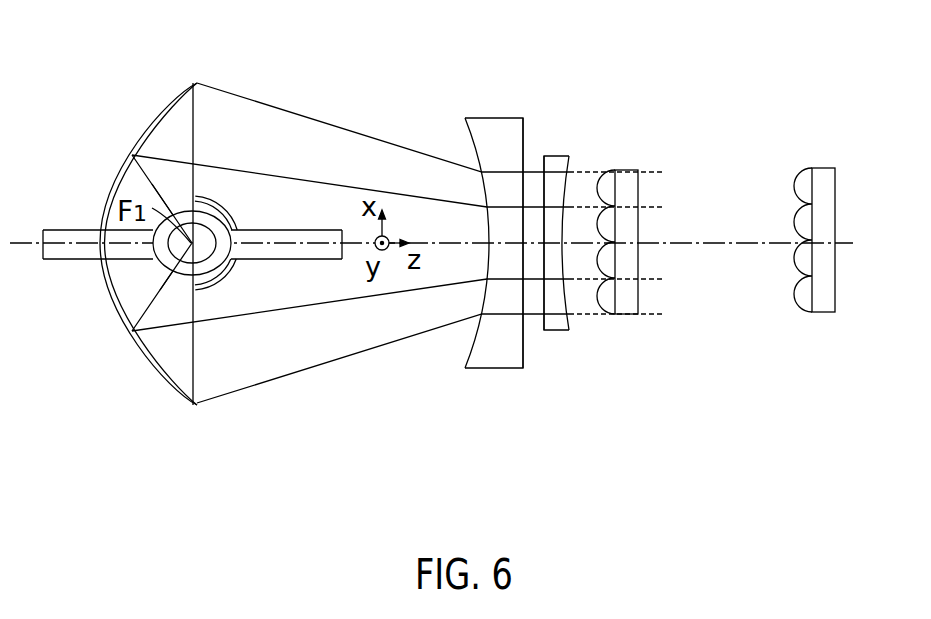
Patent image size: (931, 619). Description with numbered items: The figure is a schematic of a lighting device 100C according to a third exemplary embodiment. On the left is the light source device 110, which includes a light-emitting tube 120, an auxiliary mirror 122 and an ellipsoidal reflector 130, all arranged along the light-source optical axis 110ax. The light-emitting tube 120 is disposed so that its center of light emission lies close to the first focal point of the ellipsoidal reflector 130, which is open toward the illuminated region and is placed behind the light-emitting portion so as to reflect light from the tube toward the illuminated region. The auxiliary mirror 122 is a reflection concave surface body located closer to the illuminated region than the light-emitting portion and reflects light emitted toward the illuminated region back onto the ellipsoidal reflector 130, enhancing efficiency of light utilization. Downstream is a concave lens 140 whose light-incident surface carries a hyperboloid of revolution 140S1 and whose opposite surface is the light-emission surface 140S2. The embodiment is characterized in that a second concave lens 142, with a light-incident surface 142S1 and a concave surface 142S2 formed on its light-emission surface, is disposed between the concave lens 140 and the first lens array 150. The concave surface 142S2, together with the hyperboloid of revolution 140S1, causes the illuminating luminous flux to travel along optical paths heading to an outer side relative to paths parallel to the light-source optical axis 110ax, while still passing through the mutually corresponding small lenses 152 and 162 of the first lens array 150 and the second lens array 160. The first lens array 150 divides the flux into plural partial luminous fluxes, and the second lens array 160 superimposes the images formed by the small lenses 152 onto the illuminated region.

The lighting device 100C is at (600, 502).
The light source device 110 is at (185, 300).
The light-source optical axis 110ax is at (63, 262).
The light-emitting tube 120 is at (190, 277).
The auxiliary mirror 122 is at (220, 283).
The ellipsoidal reflector 130 is at (146, 378).
The concave lens 140 is at (480, 237).
The hyperboloid of revolution 140S1 is at (467, 147).
The light-emission surface of the concave lens 140S2 is at (523, 141).
The second concave lens 142 is at (617, 233).
The light-incident surface of the second concave lens 142S1 is at (544, 157).
The concave surface 142S2 is at (569, 160).
The first lens array 150 is at (681, 258).
The small lenses of the first lens array 152 is at (606, 176).
The second lens array 160 is at (833, 253).
The small lenses of the second lens array 162 is at (800, 177).